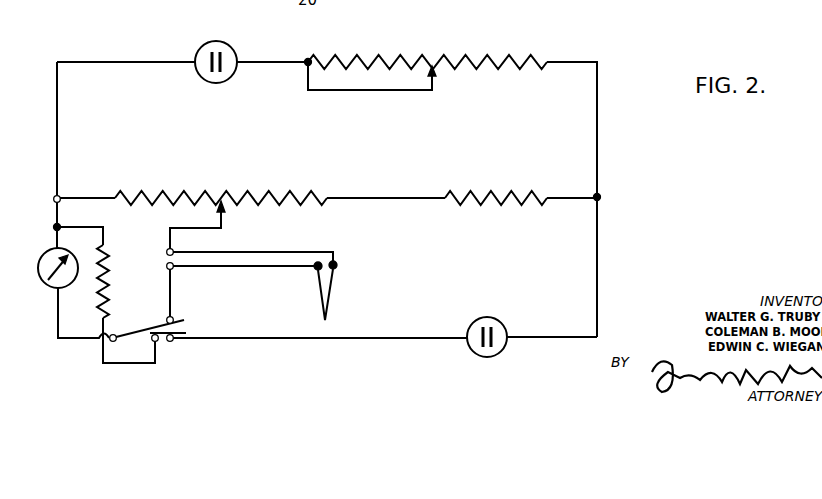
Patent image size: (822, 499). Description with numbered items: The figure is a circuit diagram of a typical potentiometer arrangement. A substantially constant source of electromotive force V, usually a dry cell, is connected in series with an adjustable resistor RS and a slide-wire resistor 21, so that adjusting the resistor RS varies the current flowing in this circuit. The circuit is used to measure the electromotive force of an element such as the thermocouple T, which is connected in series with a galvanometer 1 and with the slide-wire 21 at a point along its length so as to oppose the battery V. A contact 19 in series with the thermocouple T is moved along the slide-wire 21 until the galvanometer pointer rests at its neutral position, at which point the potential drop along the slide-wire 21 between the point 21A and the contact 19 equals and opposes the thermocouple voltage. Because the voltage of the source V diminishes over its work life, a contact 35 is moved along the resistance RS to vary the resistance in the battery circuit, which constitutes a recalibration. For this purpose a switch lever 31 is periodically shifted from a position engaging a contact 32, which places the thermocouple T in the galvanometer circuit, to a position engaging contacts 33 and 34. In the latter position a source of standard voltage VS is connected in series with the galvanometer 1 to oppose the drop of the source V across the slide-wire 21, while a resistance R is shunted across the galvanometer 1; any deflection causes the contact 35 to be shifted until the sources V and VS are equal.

The galvanometer 1 is at (47, 252).
The contact 19 is at (224, 229).
The slide-wire resistor 21 is at (219, 194).
The point on slide-wire 21A is at (117, 195).
The switch lever 31 is at (151, 327).
The contact 32 is at (173, 316).
The contact 33 is at (173, 342).
The contact 34 is at (157, 342).
The contact 35 is at (434, 91).
The source of electromotive force V is at (199, 49).
The adjustable resistor RS is at (449, 56).
The resistance R is at (119, 263).
The thermocouple T is at (331, 301).
The source of standard voltage VS is at (497, 356).